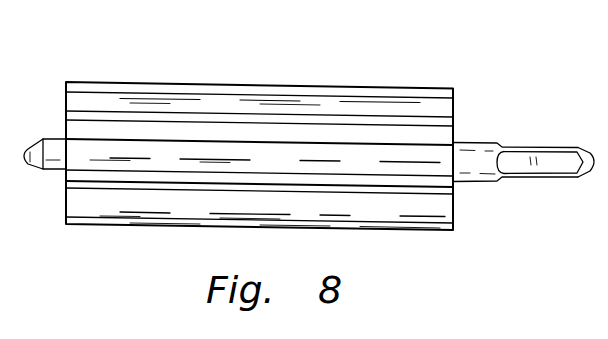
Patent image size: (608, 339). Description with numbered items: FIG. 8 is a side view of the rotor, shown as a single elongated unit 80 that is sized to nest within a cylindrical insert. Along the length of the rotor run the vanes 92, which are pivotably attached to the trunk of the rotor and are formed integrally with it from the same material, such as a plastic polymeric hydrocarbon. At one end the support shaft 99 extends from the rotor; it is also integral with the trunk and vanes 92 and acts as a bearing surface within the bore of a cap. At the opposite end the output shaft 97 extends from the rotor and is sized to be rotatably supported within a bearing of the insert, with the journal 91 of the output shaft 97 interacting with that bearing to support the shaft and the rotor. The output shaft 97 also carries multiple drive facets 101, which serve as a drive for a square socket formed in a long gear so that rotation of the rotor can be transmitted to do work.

The roller assembly 80 is at (307, 80).
The vanes 92 is at (148, 98).
The support shaft 99 is at (27, 143).
The journal 91 is at (472, 146).
The output shaft 97 is at (522, 143).
The drive facets 101 is at (555, 163).